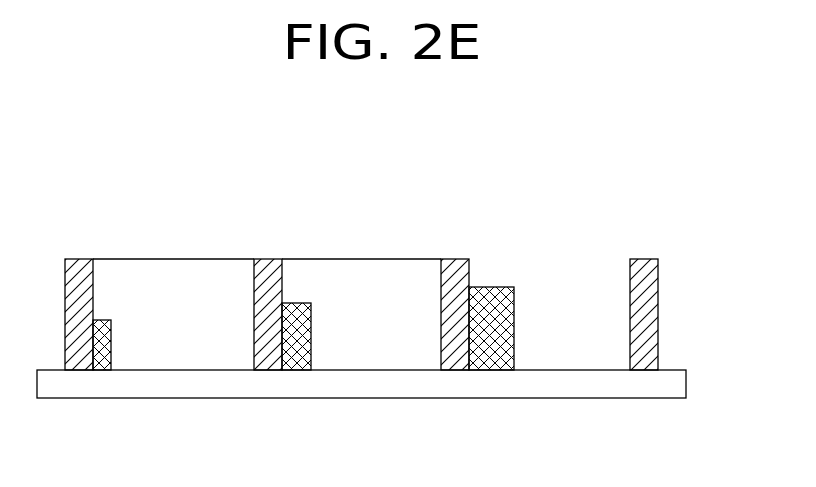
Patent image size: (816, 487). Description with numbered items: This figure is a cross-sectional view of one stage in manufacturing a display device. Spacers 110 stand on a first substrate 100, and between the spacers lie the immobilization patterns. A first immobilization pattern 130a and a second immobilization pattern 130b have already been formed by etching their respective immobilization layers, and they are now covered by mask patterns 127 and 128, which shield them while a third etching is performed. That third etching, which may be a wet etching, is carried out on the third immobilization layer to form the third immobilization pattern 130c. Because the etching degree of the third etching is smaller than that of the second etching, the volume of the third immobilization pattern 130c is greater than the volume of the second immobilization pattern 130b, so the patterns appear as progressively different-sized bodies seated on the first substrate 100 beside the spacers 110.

The first substrate 100 is at (672, 385).
The spacers 110 is at (645, 310).
The mask pattern 127 is at (198, 273).
The mask pattern 128 is at (375, 273).
The first immobilization pattern 130a is at (102, 356).
The second immobilization pattern 130b is at (293, 356).
The third immobilization pattern 130c is at (490, 360).